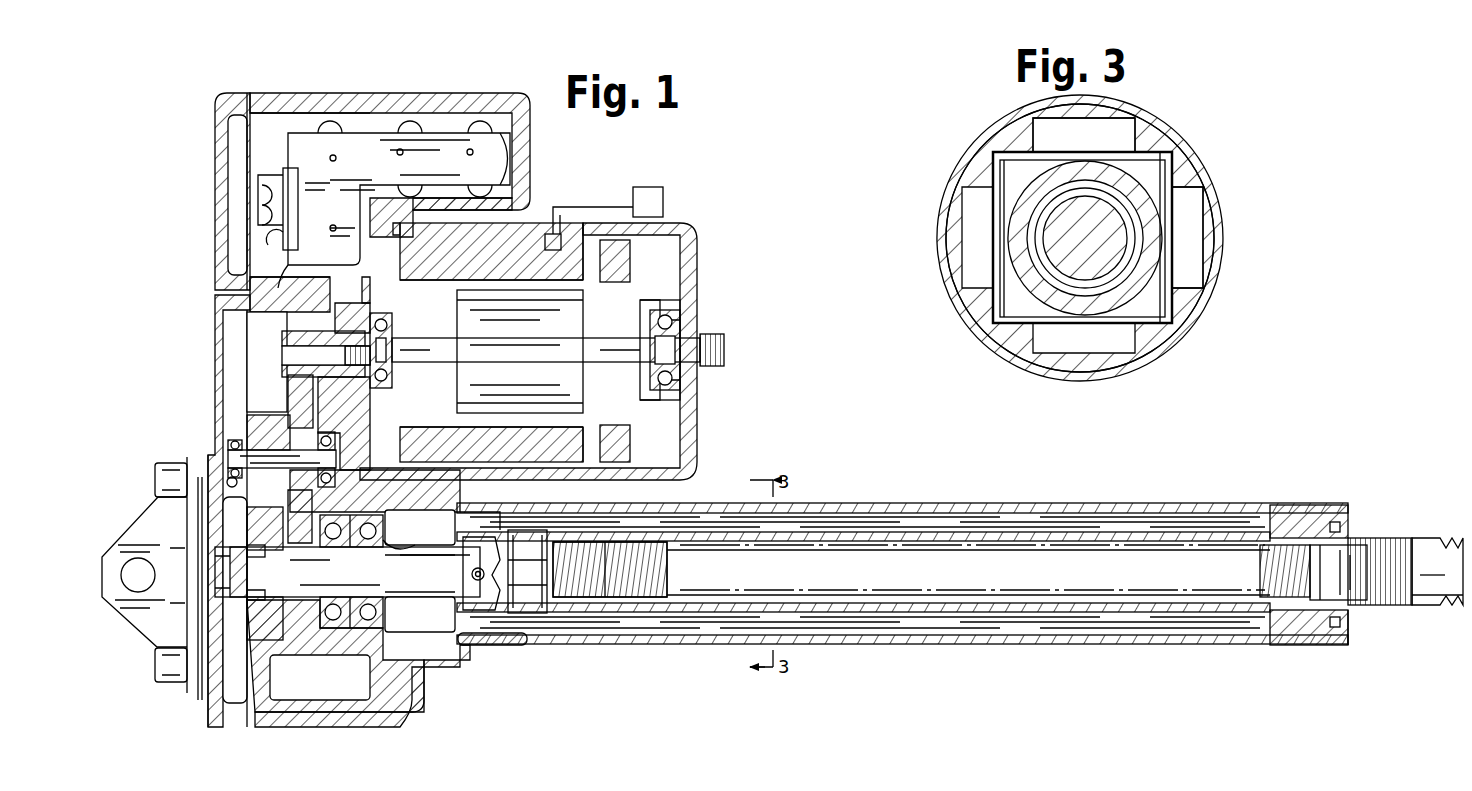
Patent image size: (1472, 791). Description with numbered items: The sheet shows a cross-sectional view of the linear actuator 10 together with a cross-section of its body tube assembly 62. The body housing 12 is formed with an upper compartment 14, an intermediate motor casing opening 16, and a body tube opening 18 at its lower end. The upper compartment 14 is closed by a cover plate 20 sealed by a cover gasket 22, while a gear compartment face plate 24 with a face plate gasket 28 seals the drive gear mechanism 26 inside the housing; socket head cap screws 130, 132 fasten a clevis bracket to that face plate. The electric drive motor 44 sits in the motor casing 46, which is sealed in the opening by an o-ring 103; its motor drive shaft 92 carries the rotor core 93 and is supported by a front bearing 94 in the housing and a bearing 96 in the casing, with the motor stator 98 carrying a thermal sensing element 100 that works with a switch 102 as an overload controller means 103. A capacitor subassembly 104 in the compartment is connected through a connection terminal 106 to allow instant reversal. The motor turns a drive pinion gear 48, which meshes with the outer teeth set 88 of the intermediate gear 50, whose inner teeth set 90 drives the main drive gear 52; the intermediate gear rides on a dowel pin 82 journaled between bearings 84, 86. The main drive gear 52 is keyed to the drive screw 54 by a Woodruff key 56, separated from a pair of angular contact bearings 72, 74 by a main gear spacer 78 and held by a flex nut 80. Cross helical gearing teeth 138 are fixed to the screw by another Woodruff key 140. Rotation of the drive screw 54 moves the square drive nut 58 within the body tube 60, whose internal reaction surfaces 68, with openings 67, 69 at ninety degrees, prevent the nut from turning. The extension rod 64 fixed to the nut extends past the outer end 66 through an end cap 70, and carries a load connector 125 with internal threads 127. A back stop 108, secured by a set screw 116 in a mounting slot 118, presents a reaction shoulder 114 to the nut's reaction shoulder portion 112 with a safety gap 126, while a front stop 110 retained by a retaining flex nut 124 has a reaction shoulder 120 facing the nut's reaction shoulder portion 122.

In FIG. 1, the linear actuator 10 is at (808, 357).
In FIG. 1, the body housing 12 is at (318, 100).
In FIG. 1, the upper compartment 14 is at (268, 128).
In FIG. 1, the motor casing opening 16 is at (386, 226).
In FIG. 1, the body tube opening 18 is at (510, 645).
In FIG. 1, the cover plate 20 is at (218, 107).
In FIG. 1, the cover gasket 22 is at (247, 93).
In FIG. 1, the gear compartment face plate 24 is at (216, 308).
In FIG. 1, the drive gear mechanism 26 is at (252, 355).
In FIG. 1, the face plate gasket 28 is at (138, 622).
In FIG. 1, the electric drive motor 44 is at (600, 300).
In FIG. 1, the motor casing 46 is at (690, 418).
In FIG. 1, the drive pinion gear 48 is at (285, 335).
In FIG. 1, the intermediate gear 50 is at (272, 447).
In FIG. 1, the main drive gear 52 is at (262, 522).
In FIG. 1, the drive screw 54 is at (628, 600).
In FIG. 3, the drive screw 54 is at (1115, 230).
In FIG. 1, the Woodruff key 56 is at (270, 556).
In FIG. 1, the drive nut 58 is at (540, 552).
In FIG. 3, the drive nut 58 is at (1000, 173).
In FIG. 1, the body tube 60 is at (830, 503).
In FIG. 3, the body tube 60 is at (1195, 318).
In FIG. 1, the body tube assembly 62 is at (934, 492).
In FIG. 3, the body tube assembly 62 is at (930, 178).
In FIG. 1, the extension rod 64 is at (1115, 613).
In FIG. 3, the extension rod 64 is at (1145, 270).
In FIG. 1, the outer end 66 is at (1350, 540).
In FIG. 3, the opening 67 is at (1200, 233).
In FIG. 1, the reaction surfaces 68 is at (1117, 535).
In FIG. 3, the reaction surfaces 68 is at (1170, 155).
In FIG. 3, the opening 69 is at (1090, 128).
In FIG. 1, the end cap 70 is at (1290, 520).
In FIG. 1, the angular contact bearing 72 is at (312, 630).
In FIG. 1, the angular contact bearing 74 is at (350, 660).
In FIG. 1, the main gear spacer 78 is at (284, 640).
In FIG. 1, the flex nut 80 is at (243, 597).
In FIG. 1, the dowel pin 82 is at (322, 458).
In FIG. 1, the bearing 84 is at (336, 437).
In FIG. 1, the bearing 86 is at (232, 490).
In FIG. 1, the outer teeth set 88 is at (292, 385).
In FIG. 1, the inner teeth set 90 is at (250, 418).
In FIG. 1, the motor drive shaft 92 is at (432, 359).
In FIG. 1, the rotor core 93 is at (555, 353).
In FIG. 1, the front bearing 94 is at (380, 318).
In FIG. 1, the bearing 96 is at (668, 320).
In FIG. 1, the motor stator 98 is at (520, 455).
In FIG. 1, the thermal sensing element 100 is at (548, 234).
In FIG. 1, the switch 102 is at (663, 200).
In FIG. 1, the overload controller means 103 is at (672, 186).
In FIG. 1, the capacitor subassembly 104 is at (380, 161).
In FIG. 1, the connection terminal 106 is at (275, 196).
In FIG. 1, the back stop 108 is at (470, 540).
In FIG. 1, the front stop 110 is at (1350, 612).
In FIG. 1, the back stop reaction shoulder portion 112 is at (527, 573).
In FIG. 1, the reaction shoulder 114 is at (493, 562).
In FIG. 1, the set screw 116 is at (462, 595).
In FIG. 1, the mounting slot 118 is at (455, 573).
In FIG. 1, the reaction shoulder 120 is at (1312, 590).
In FIG. 1, the reaction shoulder portion 122 is at (620, 545).
In FIG. 1, the retaining flex nut 124 is at (1345, 568).
In FIG. 1, the load connector 125 is at (1422, 605).
In FIG. 1, the safety gap 126 is at (478, 582).
In FIG. 1, the internal threads 127 is at (1438, 540).
In FIG. 1, the socket head cap screw 130 is at (168, 682).
In FIG. 1, the socket head cap screw 132 is at (160, 473).
In FIG. 1, the cross helical gearing teeth 138 is at (400, 522).
In FIG. 1, the Woodruff key 140 is at (415, 562).